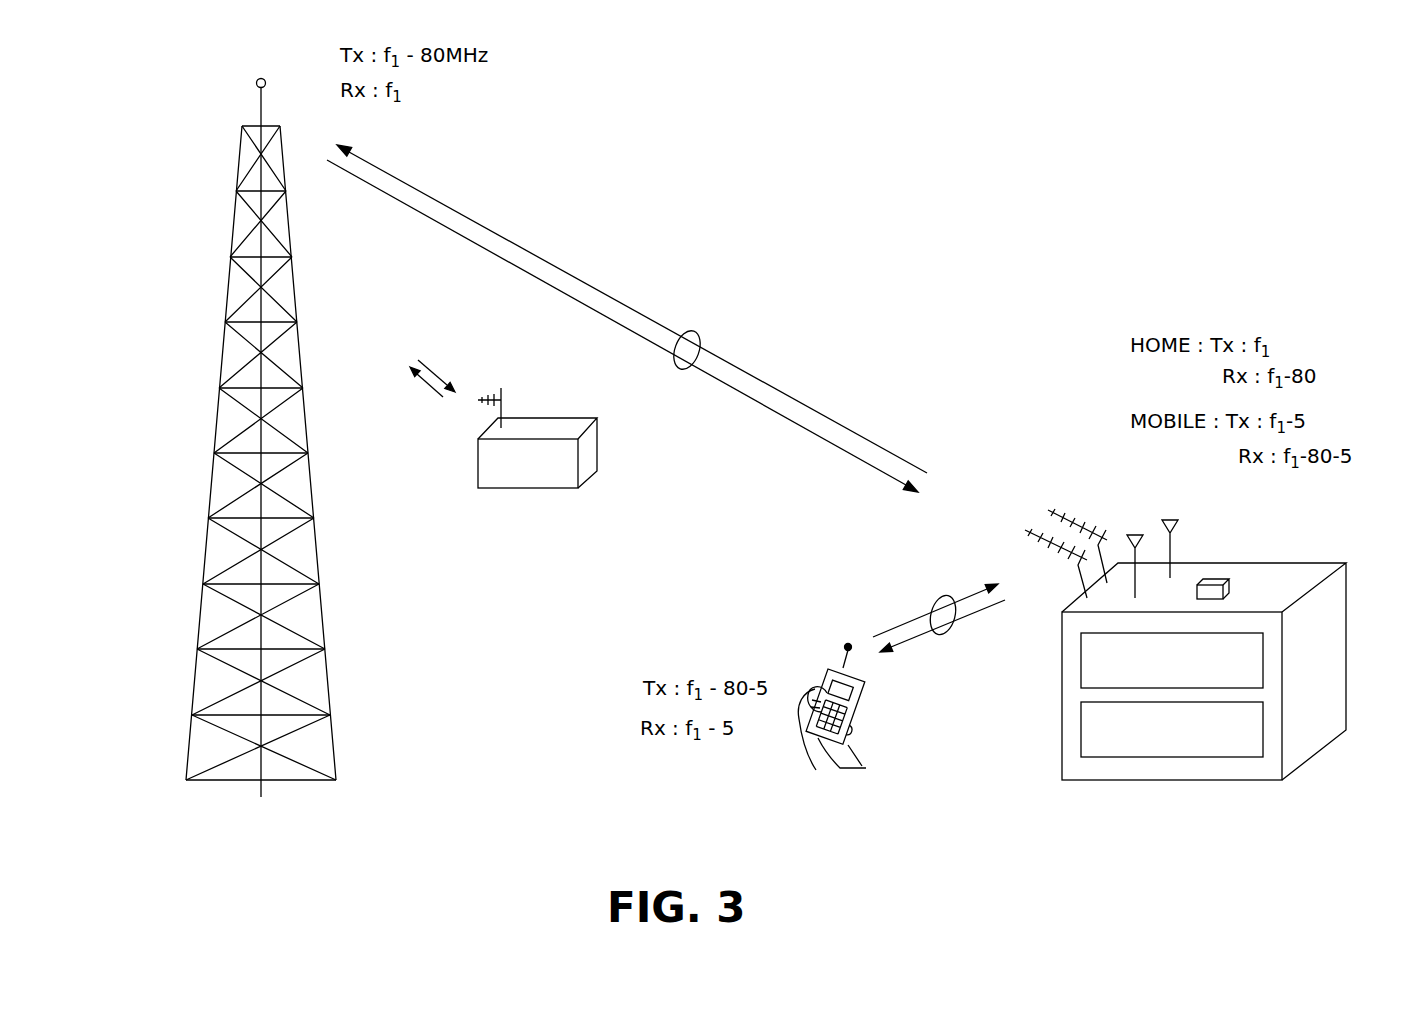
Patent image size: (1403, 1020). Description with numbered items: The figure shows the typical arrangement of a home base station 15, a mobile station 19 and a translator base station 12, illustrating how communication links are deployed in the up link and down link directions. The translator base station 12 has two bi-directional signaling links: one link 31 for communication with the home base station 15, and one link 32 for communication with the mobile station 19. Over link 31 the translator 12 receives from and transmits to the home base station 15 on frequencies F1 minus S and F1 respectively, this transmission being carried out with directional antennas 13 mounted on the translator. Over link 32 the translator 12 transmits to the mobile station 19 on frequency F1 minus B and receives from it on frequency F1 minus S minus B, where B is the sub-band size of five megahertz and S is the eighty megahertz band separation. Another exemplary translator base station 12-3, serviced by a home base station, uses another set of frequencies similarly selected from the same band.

The home base station 15 is at (263, 471).
The link 31 is at (696, 336).
The translator base station 12-3 is at (523, 488).
The translator base station 12 is at (1185, 680).
The directional antennas 13 is at (1075, 510).
The link 32 is at (950, 634).
The mobile station 19 is at (861, 739).